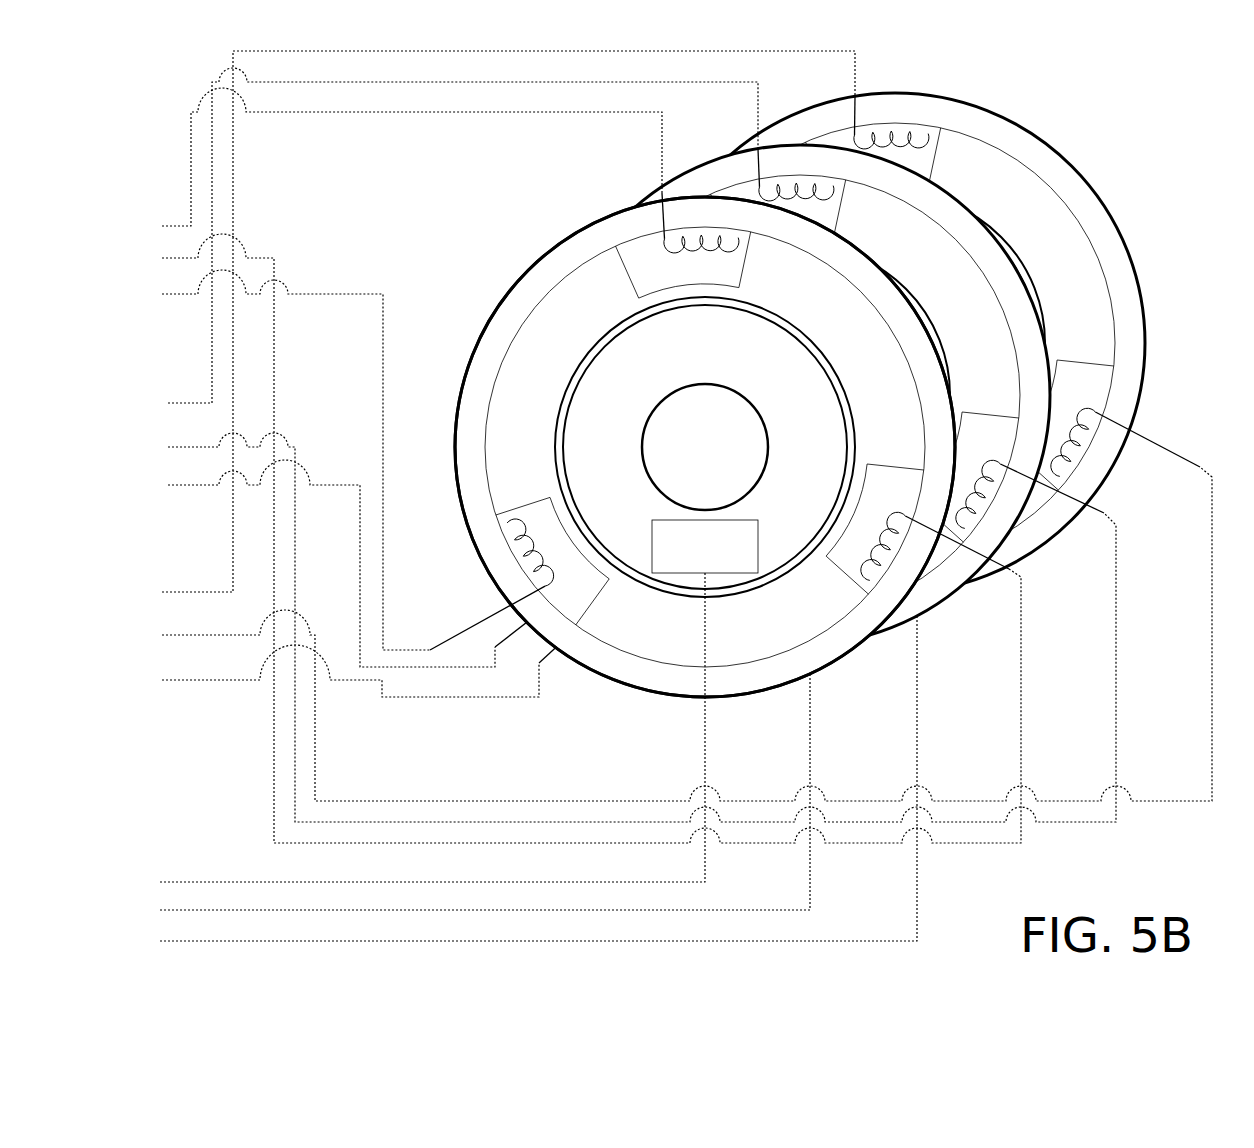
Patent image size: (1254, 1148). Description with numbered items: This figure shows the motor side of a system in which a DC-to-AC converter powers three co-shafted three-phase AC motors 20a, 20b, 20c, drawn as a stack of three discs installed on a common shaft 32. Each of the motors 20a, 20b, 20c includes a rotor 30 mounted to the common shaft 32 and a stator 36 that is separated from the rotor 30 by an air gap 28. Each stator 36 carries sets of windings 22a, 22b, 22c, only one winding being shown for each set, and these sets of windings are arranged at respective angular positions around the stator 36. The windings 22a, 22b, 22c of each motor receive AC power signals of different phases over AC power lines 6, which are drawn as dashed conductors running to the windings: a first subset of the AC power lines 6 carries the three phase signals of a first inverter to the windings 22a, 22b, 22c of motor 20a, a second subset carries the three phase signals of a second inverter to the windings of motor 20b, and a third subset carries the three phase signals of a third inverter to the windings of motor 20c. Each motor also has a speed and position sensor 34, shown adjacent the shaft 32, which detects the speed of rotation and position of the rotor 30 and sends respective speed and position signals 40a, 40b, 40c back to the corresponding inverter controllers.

The AC power lines 6 is at (397, 127).
The 3-phase AC motor 20a is at (537, 252).
The 3-phase AC motor 20b is at (952, 188).
The 3-phase AC motor 20c is at (1055, 140).
The winding 22a is at (680, 235).
The winding 22b is at (872, 578).
The winding 22c is at (493, 566).
The air gap 28 is at (562, 447).
The rotor 30 is at (582, 375).
The common shaft 32 is at (660, 398).
The speed and position sensor 34 is at (722, 576).
The stator 36 is at (640, 690).
The speed and position signal 40a is at (262, 882).
The speed and position signal 40b is at (725, 910).
The speed and position signal 40c is at (921, 910).